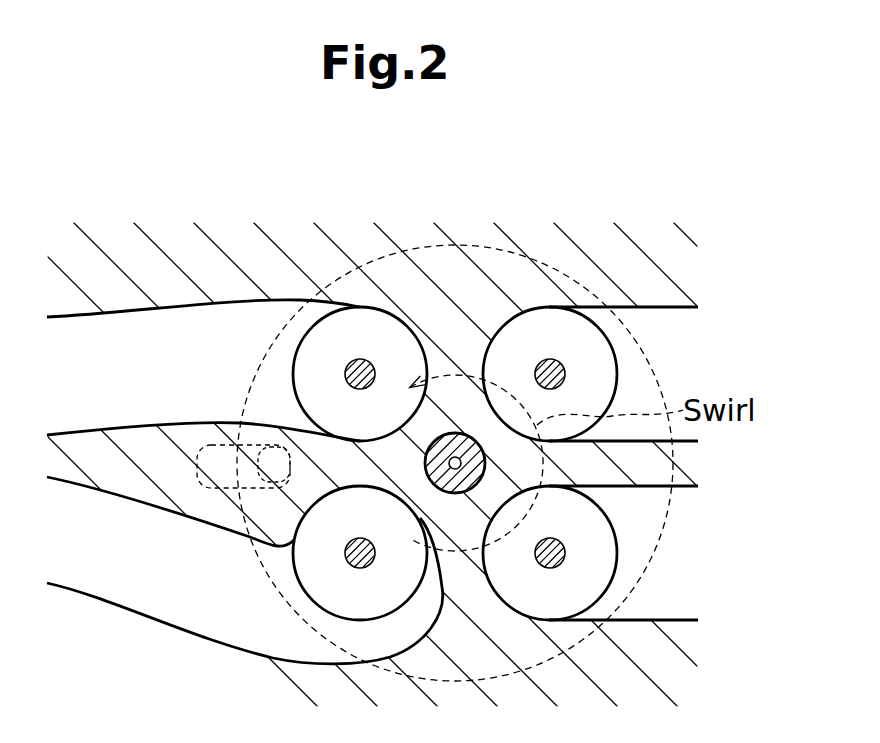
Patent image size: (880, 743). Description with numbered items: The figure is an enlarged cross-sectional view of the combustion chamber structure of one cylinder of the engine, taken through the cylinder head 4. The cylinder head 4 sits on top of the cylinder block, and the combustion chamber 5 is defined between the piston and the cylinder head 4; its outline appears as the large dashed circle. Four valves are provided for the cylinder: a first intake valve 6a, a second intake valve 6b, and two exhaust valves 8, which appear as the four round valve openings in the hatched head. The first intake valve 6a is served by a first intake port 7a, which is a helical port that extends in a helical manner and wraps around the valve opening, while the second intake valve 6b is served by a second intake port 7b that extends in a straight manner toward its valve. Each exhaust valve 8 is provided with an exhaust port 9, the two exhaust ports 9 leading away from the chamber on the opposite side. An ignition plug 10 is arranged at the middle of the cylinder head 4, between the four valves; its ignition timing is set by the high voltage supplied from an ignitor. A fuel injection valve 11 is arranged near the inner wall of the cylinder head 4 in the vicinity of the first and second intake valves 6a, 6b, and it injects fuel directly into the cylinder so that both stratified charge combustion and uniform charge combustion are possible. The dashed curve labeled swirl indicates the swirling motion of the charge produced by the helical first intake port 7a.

The cylinder head 4 is at (651, 245).
The combustion chamber 5 is at (458, 245).
The first intake valve 6a is at (372, 601).
The second intake valve 6b is at (381, 323).
The first intake port 7a is at (208, 620).
The second intake port 7b is at (183, 322).
The exhaust valve 8 is at (542, 322).
The exhaust port 9 is at (660, 315).
The ignition plug 10 is at (470, 437).
The fuel injection valve 11 is at (202, 445).